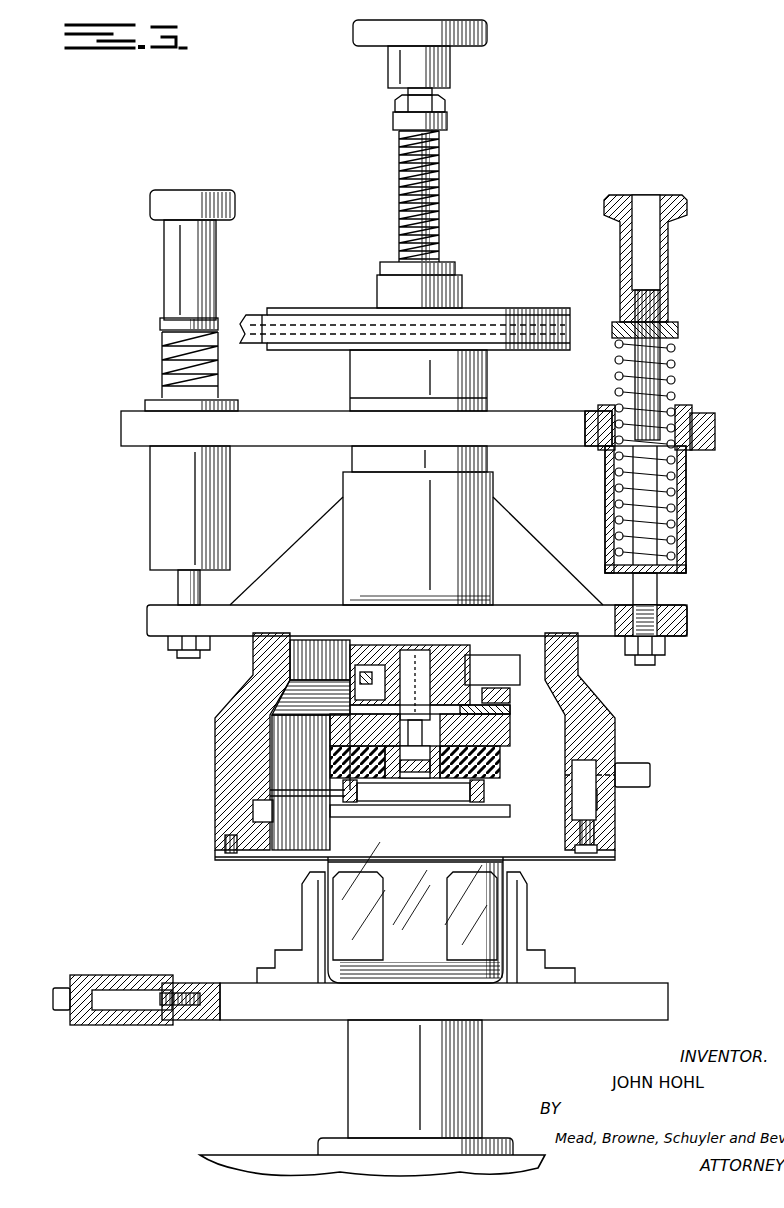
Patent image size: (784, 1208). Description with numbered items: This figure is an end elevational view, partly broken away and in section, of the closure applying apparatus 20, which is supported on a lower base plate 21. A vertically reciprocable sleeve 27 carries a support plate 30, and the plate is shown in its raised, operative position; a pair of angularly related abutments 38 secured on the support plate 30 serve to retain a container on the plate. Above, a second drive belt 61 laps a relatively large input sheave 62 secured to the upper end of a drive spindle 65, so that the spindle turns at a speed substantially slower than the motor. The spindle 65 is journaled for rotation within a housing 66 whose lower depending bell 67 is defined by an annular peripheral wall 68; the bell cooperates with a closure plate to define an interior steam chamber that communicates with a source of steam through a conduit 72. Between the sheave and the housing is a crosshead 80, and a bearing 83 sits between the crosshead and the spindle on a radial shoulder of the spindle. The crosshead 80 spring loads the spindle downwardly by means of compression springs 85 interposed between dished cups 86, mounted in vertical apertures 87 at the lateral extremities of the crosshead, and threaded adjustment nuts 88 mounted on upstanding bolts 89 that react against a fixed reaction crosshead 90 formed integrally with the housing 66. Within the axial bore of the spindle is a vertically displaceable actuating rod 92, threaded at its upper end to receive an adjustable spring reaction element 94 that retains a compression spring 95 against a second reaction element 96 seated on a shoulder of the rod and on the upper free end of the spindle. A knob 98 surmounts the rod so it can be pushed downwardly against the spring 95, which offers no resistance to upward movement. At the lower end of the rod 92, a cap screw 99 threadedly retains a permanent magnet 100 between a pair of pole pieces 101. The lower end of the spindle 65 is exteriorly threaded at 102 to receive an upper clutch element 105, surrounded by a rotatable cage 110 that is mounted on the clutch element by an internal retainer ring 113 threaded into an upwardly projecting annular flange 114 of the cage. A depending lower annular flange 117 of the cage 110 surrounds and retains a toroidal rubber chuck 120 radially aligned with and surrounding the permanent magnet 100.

The closure applying apparatus 20 is at (492, 260).
The lower base plate 21 is at (302, 1150).
The vertically reciprocable sleeve 27 is at (468, 1075).
The support plate 30 is at (612, 983).
The abutments 38 is at (300, 903).
The second drive belt 61 is at (258, 338).
The input sheave 62 is at (530, 306).
The drive spindle 65 is at (445, 293).
The housing 66 is at (416, 538).
The bell 67 is at (212, 689).
The annular peripheral wall 68 is at (225, 710).
The conduit 72 is at (632, 760).
The crosshead 80 is at (505, 420).
The bearing 83 is at (465, 464).
The compression springs 85 is at (165, 368).
The dished cups 86 is at (165, 490).
The vertical apertures 87 is at (706, 412).
The threaded adjustment nuts 88 is at (168, 322).
The upstanding bolts 89 is at (200, 590).
The fixed reaction crosshead 90 is at (680, 630).
The actuating rod 92 is at (414, 660).
The adjustable spring reaction element 94 is at (447, 118).
The compression spring 95 is at (440, 173).
The second reaction element 96 is at (385, 265).
The knob 98 is at (487, 33).
The cap screw 99 is at (370, 795).
The permanent magnet 100 is at (430, 795).
The pole pieces 101 is at (478, 680).
The exterior threads 102 is at (385, 668).
The upper clutch element 105 is at (357, 670).
The cage 110 is at (510, 733).
The internal retainer ring 113 is at (505, 690).
The annular flange 114 is at (510, 708).
The lower annular flange 117 is at (505, 762).
The toroidal rubber chuck 120 is at (490, 770).